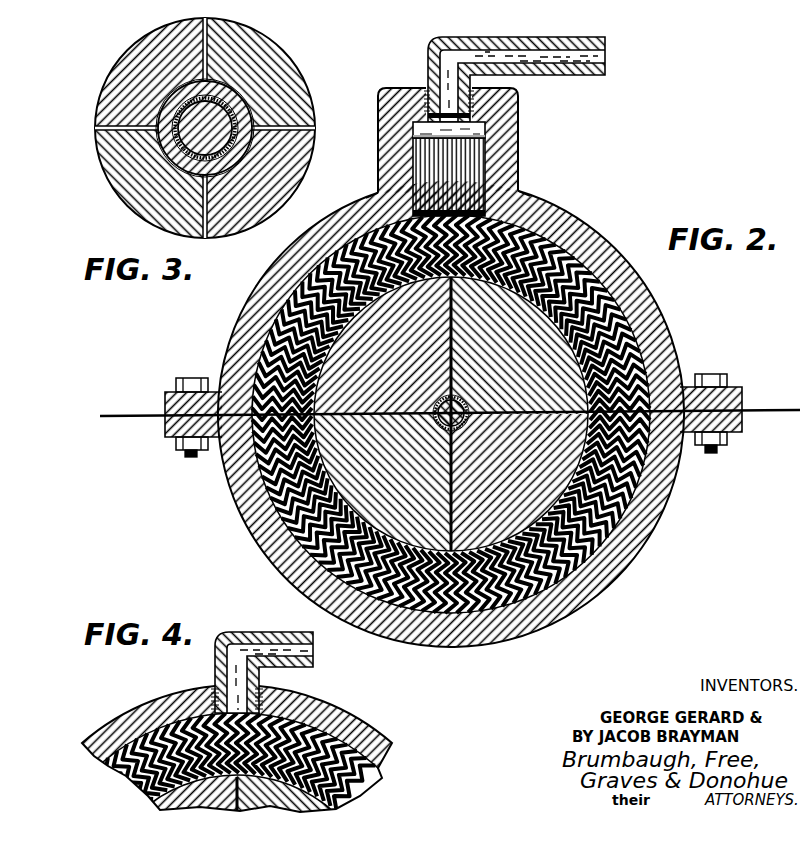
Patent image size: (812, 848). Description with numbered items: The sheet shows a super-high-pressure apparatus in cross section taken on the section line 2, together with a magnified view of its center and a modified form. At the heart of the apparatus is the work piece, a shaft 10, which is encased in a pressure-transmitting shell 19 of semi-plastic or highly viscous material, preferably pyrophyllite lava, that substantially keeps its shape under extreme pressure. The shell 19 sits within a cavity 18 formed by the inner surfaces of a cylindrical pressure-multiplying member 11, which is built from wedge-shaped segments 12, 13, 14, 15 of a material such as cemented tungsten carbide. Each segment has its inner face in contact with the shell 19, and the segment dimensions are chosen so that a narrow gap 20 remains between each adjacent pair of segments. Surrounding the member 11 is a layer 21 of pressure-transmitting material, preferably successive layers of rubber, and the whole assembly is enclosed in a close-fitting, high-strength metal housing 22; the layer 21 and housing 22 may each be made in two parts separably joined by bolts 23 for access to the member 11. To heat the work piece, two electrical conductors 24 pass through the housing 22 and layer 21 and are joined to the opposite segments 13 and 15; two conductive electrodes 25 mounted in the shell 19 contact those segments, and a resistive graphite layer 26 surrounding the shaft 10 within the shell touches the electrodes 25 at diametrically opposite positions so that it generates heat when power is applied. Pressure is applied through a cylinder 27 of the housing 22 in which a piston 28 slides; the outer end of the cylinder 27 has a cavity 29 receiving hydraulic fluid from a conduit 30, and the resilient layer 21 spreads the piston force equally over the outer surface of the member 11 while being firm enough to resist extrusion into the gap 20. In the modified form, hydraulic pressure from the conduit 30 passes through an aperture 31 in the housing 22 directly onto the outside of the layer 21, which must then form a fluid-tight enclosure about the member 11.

In FIG. 2, the section line 2— 2 is at (448, 1).
In FIG. 2, the shaft 10 is at (461, 418).
In FIG. 3, the shaft 10 is at (192, 165).
In FIG. 2, the cylindrical pressure-multiplying member 11 is at (570, 212).
In FIG. 2, the wedge-shaped segment 12 is at (519, 345).
In FIG. 3, the wedge-shaped segment 12 is at (272, 55).
In FIG. 2, the wedge-shaped segment 13 is at (530, 484).
In FIG. 3, the wedge-shaped segment 13 is at (270, 182).
In FIG. 2, the wedge-shaped segment 14 is at (382, 482).
In FIG. 3, the wedge-shaped segment 14 is at (122, 182).
In FIG. 2, the wedge-shaped segment 15 is at (382, 345).
In FIG. 3, the wedge-shaped segment 15 is at (145, 56).
In FIG. 2, the cavity 18 is at (447, 428).
In FIG. 3, the cavity 18 is at (248, 112).
In FIG. 2, the pressure-transmitting shell 19 is at (463, 405).
In FIG. 3, the pressure-transmitting shell 19 is at (212, 82).
In FIG. 2, the gap 20 is at (456, 330).
In FIG. 3, the gap 20 is at (210, 34).
In FIG. 2, the layer of pressure-transmitting material 21 is at (352, 0).
In FIG. 2, the metal housing 22 is at (604, 226).
In FIG. 2, the bolts 23 is at (190, 377).
In FIG. 2, the electrical conductors 24 is at (118, 414).
In FIG. 3, the conductive electrodes 25 is at (178, 104).
In FIG. 3, the resistive graphite layer 26 is at (172, 138).
In FIG. 2, the cylinder 27 is at (388, 154).
In FIG. 2, the piston 28 is at (466, 158).
In FIG. 2, the cavity 29 is at (428, 130).
In FIG. 2, the conduit 30 is at (582, 62).
In FIG. 4, the conduit 30 is at (300, 646).
In FIG. 4, the aperture 31 is at (214, 690).